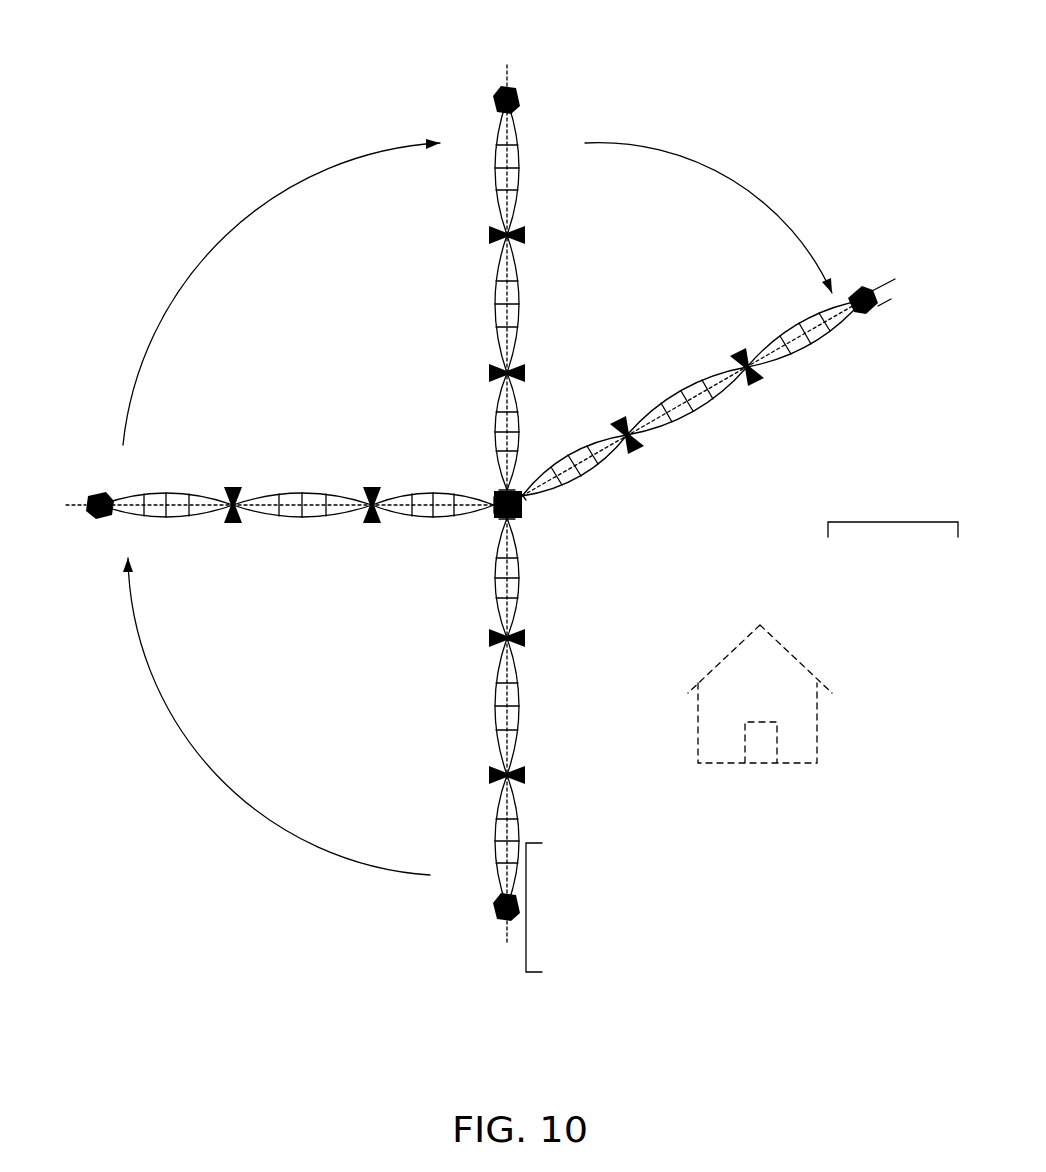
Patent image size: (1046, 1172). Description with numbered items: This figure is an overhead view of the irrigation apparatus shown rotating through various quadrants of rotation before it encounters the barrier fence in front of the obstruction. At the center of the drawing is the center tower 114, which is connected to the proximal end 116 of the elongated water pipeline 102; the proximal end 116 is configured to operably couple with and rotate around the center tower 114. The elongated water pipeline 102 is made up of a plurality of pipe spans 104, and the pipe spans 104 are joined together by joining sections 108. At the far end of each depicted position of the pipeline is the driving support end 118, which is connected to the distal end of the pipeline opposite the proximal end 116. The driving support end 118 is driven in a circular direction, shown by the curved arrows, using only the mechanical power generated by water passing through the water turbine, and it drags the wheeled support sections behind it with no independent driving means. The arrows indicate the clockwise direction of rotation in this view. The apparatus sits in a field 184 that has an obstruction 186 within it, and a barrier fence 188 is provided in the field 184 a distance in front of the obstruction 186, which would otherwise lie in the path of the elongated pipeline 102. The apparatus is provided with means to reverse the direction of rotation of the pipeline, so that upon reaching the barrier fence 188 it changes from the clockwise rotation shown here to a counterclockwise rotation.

The elongated water pipeline 102 is at (495, 303).
The pipe spans 104 is at (520, 165).
The joining sections 108 is at (516, 236).
The center tower 114 is at (522, 516).
The proximal end 116 is at (520, 470).
The driving support end 118 is at (520, 95).
The field 184 is at (345, 305).
The obstruction 186 is at (722, 697).
The barrier fence 188 is at (855, 522).